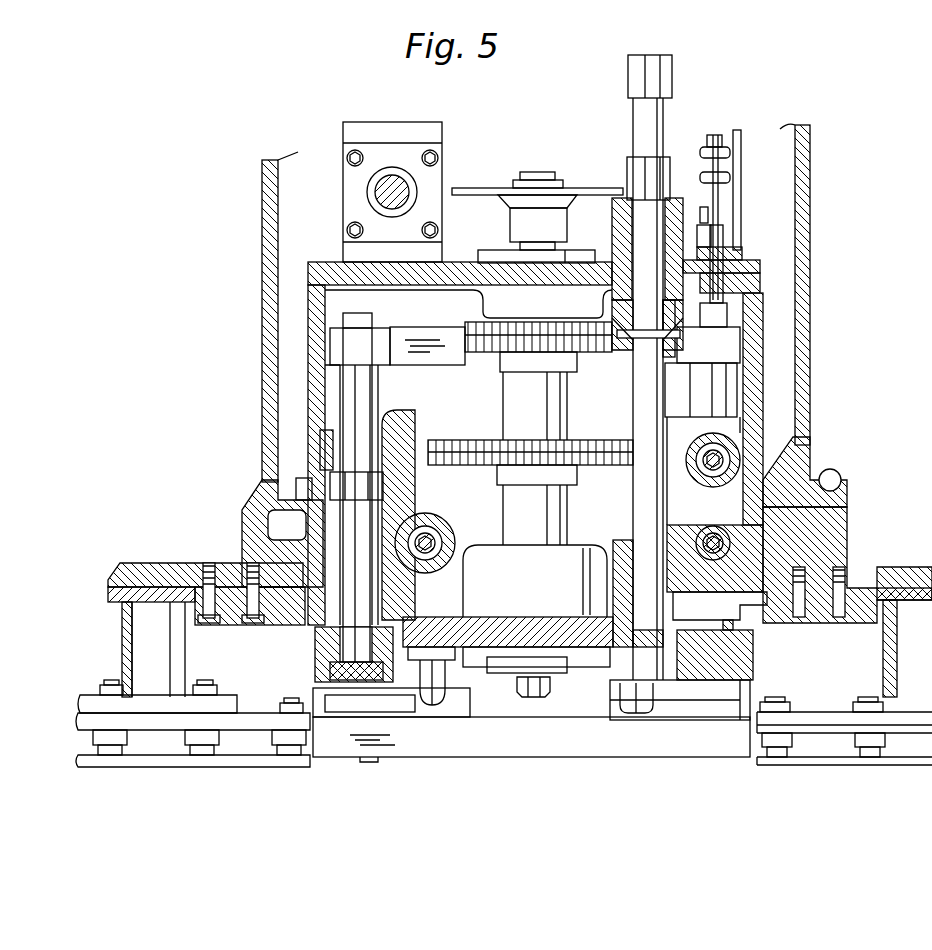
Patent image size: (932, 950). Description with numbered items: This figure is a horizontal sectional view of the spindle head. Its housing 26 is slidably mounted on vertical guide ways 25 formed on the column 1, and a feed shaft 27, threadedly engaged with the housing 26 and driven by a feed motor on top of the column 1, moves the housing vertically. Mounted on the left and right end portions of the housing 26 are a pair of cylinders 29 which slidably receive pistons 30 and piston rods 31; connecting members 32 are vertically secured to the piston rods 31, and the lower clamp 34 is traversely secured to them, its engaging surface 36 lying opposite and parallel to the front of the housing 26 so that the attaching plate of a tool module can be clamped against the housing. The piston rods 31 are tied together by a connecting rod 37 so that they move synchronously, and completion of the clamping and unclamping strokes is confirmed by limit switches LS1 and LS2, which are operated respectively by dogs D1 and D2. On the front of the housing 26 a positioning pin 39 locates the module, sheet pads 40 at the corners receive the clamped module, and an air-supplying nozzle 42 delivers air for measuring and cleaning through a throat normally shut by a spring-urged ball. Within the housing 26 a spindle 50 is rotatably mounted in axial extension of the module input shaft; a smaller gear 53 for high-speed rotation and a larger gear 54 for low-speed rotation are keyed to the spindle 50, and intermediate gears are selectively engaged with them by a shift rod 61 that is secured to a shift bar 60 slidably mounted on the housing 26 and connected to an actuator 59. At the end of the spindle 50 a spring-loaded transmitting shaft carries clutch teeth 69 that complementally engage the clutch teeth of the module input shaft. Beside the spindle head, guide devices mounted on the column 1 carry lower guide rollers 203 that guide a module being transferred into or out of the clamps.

The column 1 is at (800, 470).
The vertical guide ways 25 is at (275, 525).
The housing 26 is at (758, 410).
The feed shaft 27 is at (440, 527).
The cylinders 29 is at (310, 487).
The pistons 30 is at (385, 487).
The piston rods 31 is at (360, 517).
The connecting members 32 is at (328, 645).
The clamp 34 is at (392, 748).
The engaging surface 36 is at (520, 718).
The connecting rod 37 is at (383, 331).
The positioning pin 39 is at (636, 712).
The sheet pads 40 is at (615, 683).
The air-supplying nozzle 42 is at (433, 708).
The spindle 50 is at (560, 520).
The smaller gear 53 is at (482, 342).
The larger gear 54 is at (468, 448).
The actuator 59 is at (655, 118).
The shift bar 60 is at (633, 490).
The shift rod 61 is at (620, 352).
The clutch teeth 69 is at (545, 698).
The lower guide rollers 203 is at (200, 752).
The limit switch LS1 is at (700, 215).
The limit switch LS2 is at (705, 138).
The dog D1 is at (700, 180).
The dog D2 is at (700, 152).